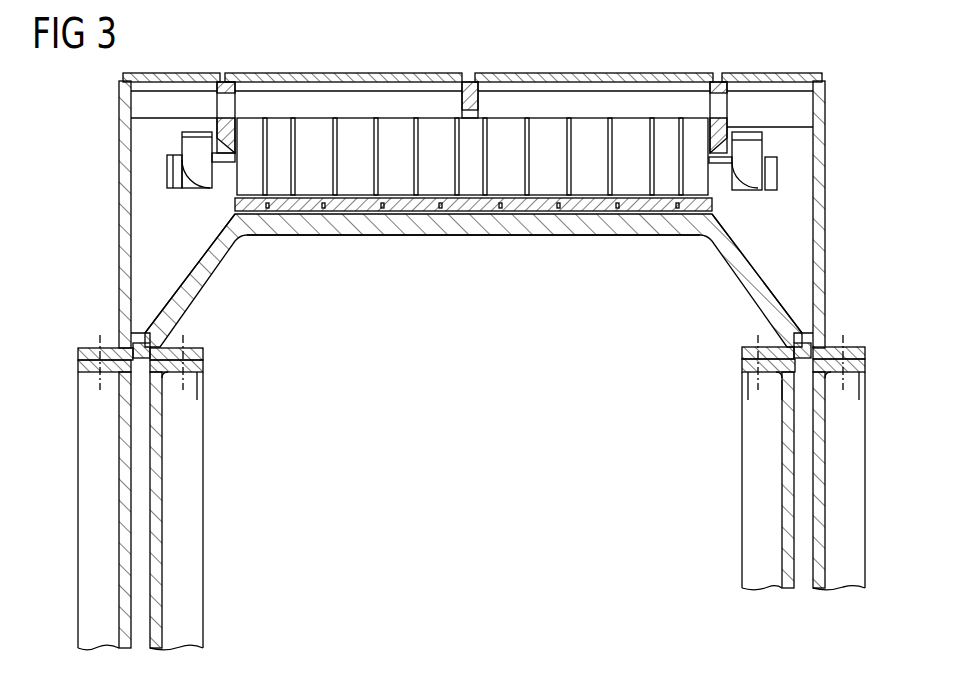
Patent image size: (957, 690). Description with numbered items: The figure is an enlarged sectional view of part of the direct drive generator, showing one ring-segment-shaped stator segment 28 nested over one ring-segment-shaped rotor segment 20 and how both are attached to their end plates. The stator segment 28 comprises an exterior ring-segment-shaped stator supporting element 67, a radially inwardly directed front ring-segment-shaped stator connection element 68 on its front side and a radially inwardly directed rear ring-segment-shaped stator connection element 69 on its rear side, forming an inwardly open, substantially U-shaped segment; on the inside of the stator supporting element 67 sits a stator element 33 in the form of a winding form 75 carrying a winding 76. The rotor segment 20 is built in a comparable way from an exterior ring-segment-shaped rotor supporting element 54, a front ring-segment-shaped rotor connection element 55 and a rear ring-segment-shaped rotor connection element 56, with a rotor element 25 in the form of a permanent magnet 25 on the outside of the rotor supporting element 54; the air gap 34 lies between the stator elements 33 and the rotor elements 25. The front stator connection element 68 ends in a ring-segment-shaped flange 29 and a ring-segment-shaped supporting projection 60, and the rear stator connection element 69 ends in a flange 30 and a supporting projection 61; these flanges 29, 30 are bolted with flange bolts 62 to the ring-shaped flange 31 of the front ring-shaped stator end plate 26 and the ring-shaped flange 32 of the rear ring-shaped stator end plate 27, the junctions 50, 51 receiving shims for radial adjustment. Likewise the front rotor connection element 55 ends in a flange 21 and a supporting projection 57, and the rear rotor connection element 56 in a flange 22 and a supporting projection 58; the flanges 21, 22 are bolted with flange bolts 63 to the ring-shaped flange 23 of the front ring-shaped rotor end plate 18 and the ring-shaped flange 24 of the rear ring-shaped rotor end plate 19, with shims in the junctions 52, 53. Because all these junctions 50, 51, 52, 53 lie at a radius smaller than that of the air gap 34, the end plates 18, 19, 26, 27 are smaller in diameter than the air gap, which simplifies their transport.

The front ring-shaped rotor end plate 18 is at (158, 618).
The rear ring-shaped rotor end plate 19 is at (785, 493).
The ring-segment-shaped rotor segment 20 is at (393, 238).
The ring-segment-shaped flange 21 is at (200, 352).
The ring-segment-shaped flange 22 is at (740, 352).
The ring-shaped flange 23 is at (200, 376).
The ring-shaped flange 24 is at (745, 375).
The rotor element 25 is at (700, 205).
The front ring-shaped stator end plate 26 is at (118, 478).
The rear ring-shaped stator end plate 27 is at (820, 484).
The ring-segment-shaped stator segment 28 is at (300, 74).
The ring-segment-shaped flange 29 is at (85, 352).
The ring-segment-shaped flange 30 is at (850, 345).
The ring-shaped flange 31 is at (80, 378).
The ring-shaped flange 32 is at (840, 375).
The stator element 33 is at (360, 128).
The air gap 34 is at (236, 198).
The junction 50 is at (85, 368).
The junction 51 is at (866, 360).
The junction 52 is at (200, 365).
The junction 53 is at (745, 368).
The exterior ring-segment-shaped rotor supporting element 54 is at (497, 222).
The front ring-segment-shaped rotor connection element 55 is at (220, 258).
The rear ring-segment-shaped rotor connection element 56 is at (722, 273).
The ring-segment-shaped supporting projection 57 is at (112, 370).
The ring-segment-shaped supporting projection 58 is at (785, 375).
The ring-segment-shaped supporting projection 60 is at (145, 335).
The ring-segment-shaped supporting projection 61 is at (800, 335).
The flange bolt 62 is at (843, 335).
The flange bolt 63 is at (188, 337).
The exterior ring-segment-shaped stator supporting element 67 is at (616, 76).
The front ring-segment-shaped stator connection element 68 is at (127, 196).
The rear ring-segment-shaped stator connection element 69 is at (820, 230).
The winding form 75 is at (505, 128).
The winding 76 is at (752, 150).